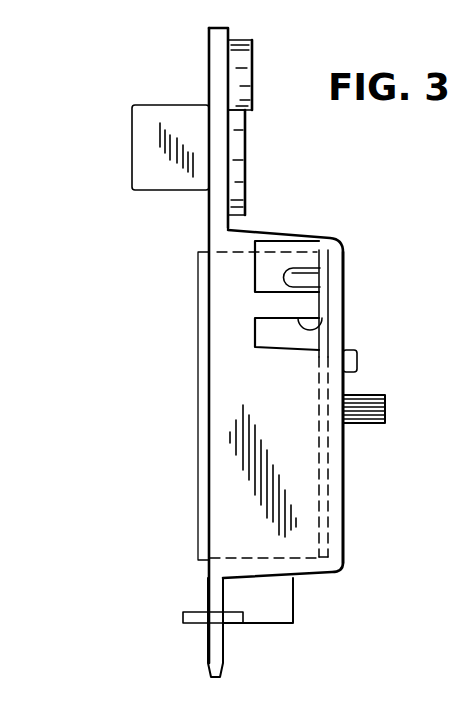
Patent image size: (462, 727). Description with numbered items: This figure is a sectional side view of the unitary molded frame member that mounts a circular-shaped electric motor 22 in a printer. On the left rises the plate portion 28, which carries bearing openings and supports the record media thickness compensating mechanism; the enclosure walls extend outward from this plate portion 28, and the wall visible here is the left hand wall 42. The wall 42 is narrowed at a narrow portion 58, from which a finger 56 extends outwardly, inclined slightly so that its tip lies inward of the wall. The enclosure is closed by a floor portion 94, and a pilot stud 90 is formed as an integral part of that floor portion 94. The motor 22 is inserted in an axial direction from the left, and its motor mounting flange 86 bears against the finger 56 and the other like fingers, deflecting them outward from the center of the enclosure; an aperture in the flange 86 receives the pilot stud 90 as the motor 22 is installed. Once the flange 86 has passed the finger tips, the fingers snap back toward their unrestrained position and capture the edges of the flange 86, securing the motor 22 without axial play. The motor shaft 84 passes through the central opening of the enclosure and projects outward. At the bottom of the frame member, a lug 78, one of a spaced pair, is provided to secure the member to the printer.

The electric motor 22 is at (198, 477).
The plate portion 28 is at (209, 212).
The left hand wall 42 is at (299, 397).
The finger 56 is at (300, 333).
The narrow portion 58 is at (215, 333).
The lug 78 is at (222, 648).
The shaft 84 is at (360, 395).
The motor mounting flange 86 is at (325, 287).
The pilot stud 90 is at (300, 265).
The floor portion 94 is at (345, 482).